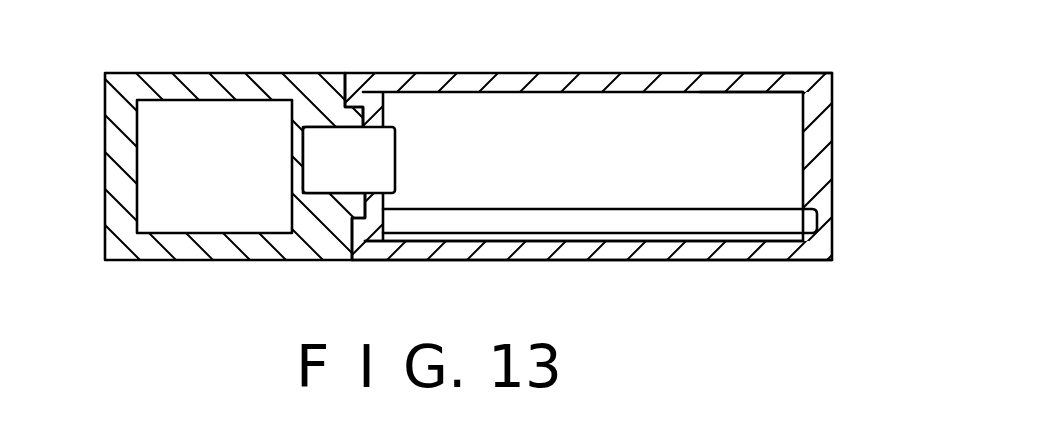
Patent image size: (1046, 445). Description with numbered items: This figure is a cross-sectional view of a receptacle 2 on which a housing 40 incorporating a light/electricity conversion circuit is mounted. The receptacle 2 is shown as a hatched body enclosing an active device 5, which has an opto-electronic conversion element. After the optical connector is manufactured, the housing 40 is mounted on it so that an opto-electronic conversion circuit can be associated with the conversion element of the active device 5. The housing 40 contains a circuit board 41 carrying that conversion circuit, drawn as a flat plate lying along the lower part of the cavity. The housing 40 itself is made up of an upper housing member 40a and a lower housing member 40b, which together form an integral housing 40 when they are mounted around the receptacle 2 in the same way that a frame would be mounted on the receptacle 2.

The receptacle 2 is at (188, 72).
The active device 5 is at (378, 164).
The housing 40 is at (600, 166).
The upper housing member 40a is at (828, 76).
The lower housing member 40b is at (755, 252).
The circuit board 41 is at (555, 223).